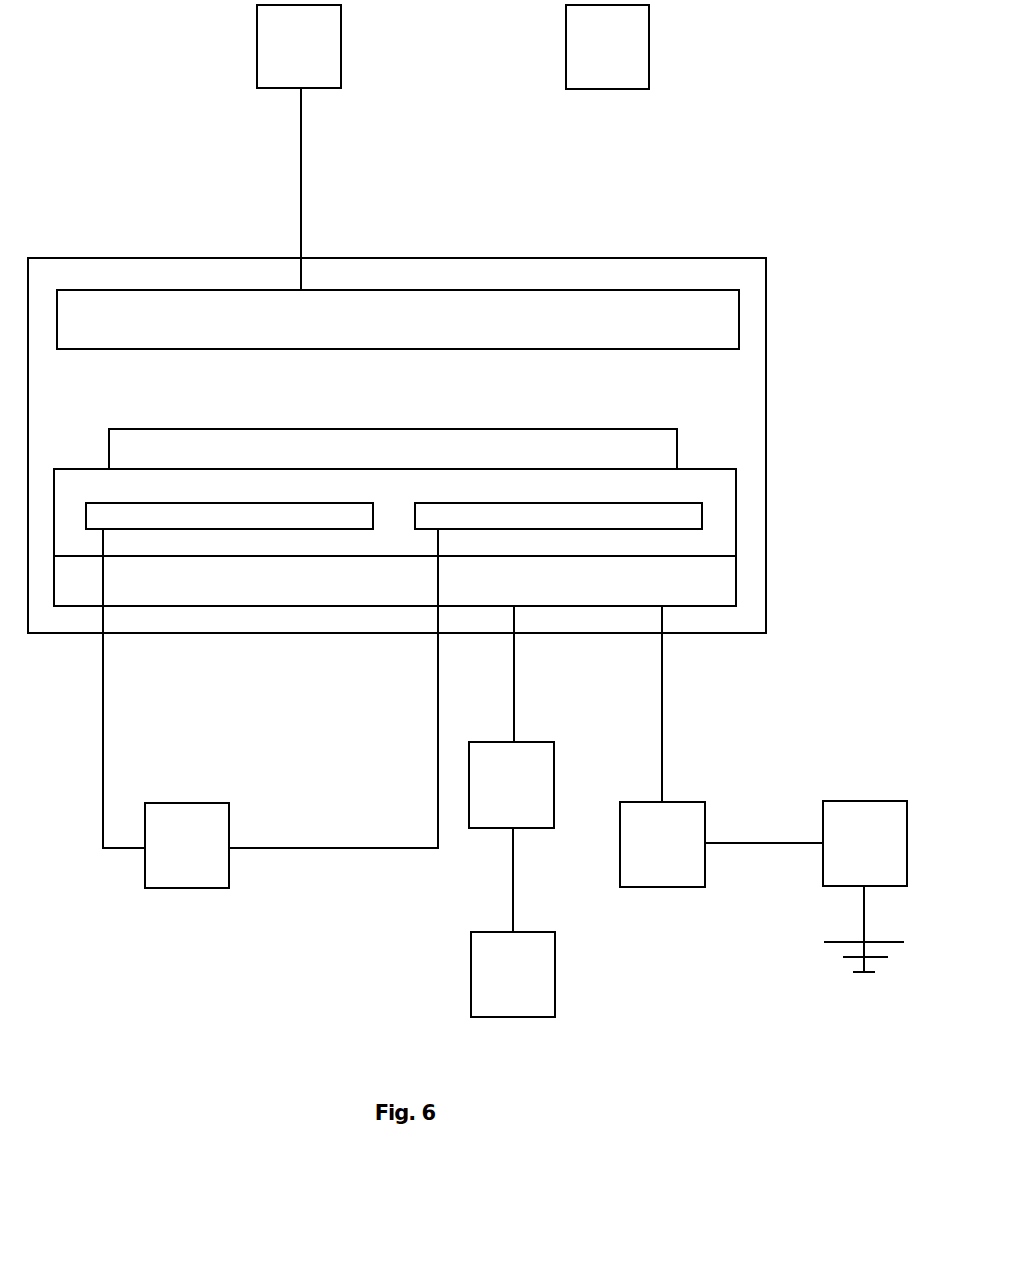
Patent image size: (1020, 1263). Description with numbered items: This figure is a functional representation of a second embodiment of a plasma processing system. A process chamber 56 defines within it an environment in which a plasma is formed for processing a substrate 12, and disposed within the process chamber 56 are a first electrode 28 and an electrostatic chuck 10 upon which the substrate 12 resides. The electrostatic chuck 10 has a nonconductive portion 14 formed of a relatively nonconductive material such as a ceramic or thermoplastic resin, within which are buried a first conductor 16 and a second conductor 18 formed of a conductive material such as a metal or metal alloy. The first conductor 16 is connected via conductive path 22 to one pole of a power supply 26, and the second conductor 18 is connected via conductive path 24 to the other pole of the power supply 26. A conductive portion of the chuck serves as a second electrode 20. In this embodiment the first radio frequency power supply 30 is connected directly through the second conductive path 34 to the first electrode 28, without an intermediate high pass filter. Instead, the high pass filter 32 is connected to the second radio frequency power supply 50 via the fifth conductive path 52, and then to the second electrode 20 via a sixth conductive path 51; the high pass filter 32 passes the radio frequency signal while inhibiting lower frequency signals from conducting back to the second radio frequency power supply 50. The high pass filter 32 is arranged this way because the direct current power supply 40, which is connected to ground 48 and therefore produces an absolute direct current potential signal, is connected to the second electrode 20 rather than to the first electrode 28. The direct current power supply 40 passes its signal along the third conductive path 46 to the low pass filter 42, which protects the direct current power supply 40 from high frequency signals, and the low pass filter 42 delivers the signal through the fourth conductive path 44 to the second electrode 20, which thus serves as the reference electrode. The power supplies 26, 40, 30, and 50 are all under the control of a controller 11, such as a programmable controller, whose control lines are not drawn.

The electrostatic chuck 10 is at (745, 534).
The controller 11 is at (607, 47).
The substrate 12 is at (393, 449).
The nonconductive portion 14 is at (395, 530).
The first conductor 16 is at (229, 516).
The second conductor 18 is at (558, 516).
The second electrode 20 is at (395, 581).
The conductive path 22 is at (107, 688).
The conductive path 24 is at (333, 688).
The power supply 26 is at (187, 845).
The first electrode 28 is at (398, 319).
The first radio frequency power supply 30 is at (299, 46).
The high pass filter 32 is at (511, 785).
The second conductive path 34 is at (319, 189).
The direct current power supply 40 is at (865, 843).
The low pass filter 42 is at (662, 844).
The fourth conductive path 44 is at (645, 704).
The third conductive path 46 is at (764, 828).
The ground 48 is at (846, 929).
The second radio frequency power supply 50 is at (513, 974).
The sixth conductive path 51 is at (530, 674).
The fifth conductive path 52 is at (530, 880).
The process chamber 56 is at (787, 441).